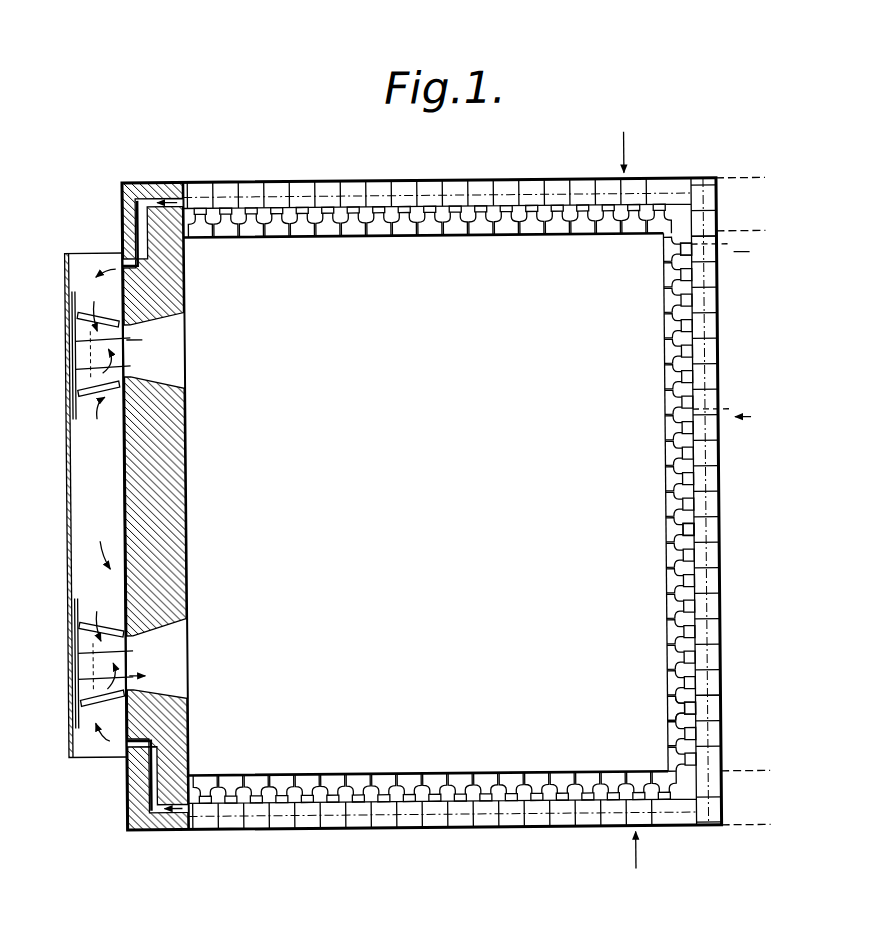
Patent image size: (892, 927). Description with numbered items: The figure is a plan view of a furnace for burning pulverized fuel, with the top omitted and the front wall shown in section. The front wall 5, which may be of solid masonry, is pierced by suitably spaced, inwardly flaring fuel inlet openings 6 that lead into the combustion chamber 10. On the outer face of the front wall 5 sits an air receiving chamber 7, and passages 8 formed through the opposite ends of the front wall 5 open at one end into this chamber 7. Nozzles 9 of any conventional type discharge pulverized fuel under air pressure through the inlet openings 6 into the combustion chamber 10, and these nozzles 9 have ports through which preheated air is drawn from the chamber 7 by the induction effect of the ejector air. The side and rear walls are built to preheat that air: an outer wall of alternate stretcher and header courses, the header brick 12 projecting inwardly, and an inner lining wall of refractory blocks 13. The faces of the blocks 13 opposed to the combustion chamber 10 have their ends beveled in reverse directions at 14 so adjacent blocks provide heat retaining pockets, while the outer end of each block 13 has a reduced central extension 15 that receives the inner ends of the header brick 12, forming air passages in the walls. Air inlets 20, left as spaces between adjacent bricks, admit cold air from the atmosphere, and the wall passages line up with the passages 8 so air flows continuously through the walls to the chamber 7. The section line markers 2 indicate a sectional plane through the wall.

The section line 2 is at (721, 327).
The front wall 5 is at (187, 484).
The fuel inlet openings 6 is at (177, 328).
The air receiving chamber 7 is at (96, 505).
The passages 8 is at (186, 258).
The nozzles 9 is at (83, 353).
The combustion chamber 10 is at (426, 503).
The header brick 12 is at (492, 182).
The refractory lining block 13 is at (446, 230).
The beveled faces 14 is at (676, 718).
The reduced central extension 15 is at (692, 568).
The air inlets 20 is at (649, 183).